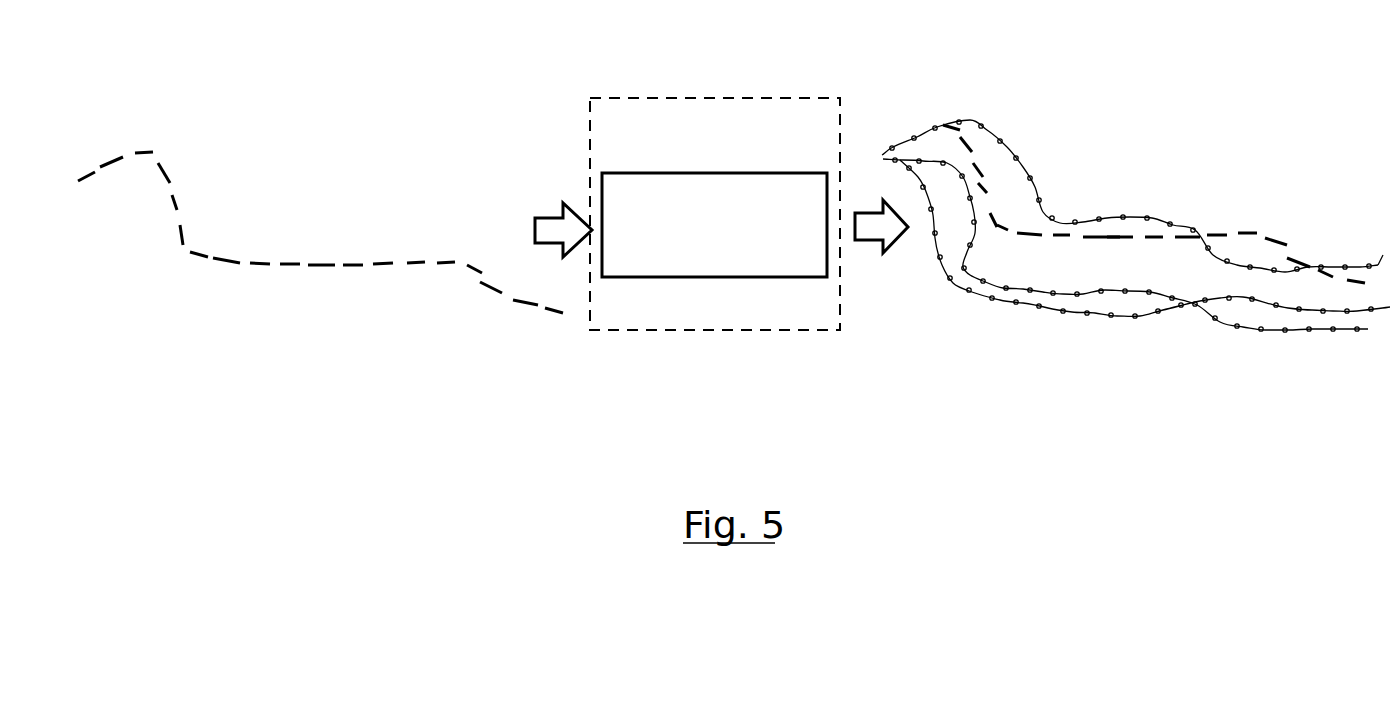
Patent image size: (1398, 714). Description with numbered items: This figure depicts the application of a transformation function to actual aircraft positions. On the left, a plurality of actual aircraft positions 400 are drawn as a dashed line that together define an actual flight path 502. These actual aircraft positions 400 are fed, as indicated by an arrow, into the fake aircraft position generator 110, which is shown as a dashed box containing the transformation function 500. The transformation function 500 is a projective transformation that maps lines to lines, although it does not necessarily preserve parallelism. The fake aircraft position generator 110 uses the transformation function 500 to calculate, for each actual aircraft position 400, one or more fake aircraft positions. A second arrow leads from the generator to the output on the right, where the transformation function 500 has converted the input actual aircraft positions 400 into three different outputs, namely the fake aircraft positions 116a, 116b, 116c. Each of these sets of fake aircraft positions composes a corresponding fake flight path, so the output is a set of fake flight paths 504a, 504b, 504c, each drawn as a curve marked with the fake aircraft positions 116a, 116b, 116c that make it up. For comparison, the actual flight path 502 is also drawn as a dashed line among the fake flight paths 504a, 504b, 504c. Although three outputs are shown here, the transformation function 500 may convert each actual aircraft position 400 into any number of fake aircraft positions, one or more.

The fake aircraft position generator 110 is at (650, 138).
The actual aircraft position 400 is at (170, 183).
The transformation function 500 is at (740, 172).
The actual flight path 502 is at (83, 180).
The fake flight path 504a is at (1028, 177).
The fake flight path 504b is at (1035, 288).
The fake flight path 504c is at (987, 300).
The fake aircraft positions 116a is at (987, 130).
The fake aircraft positions 116b is at (1243, 328).
The fake aircraft positions 116c is at (935, 242).